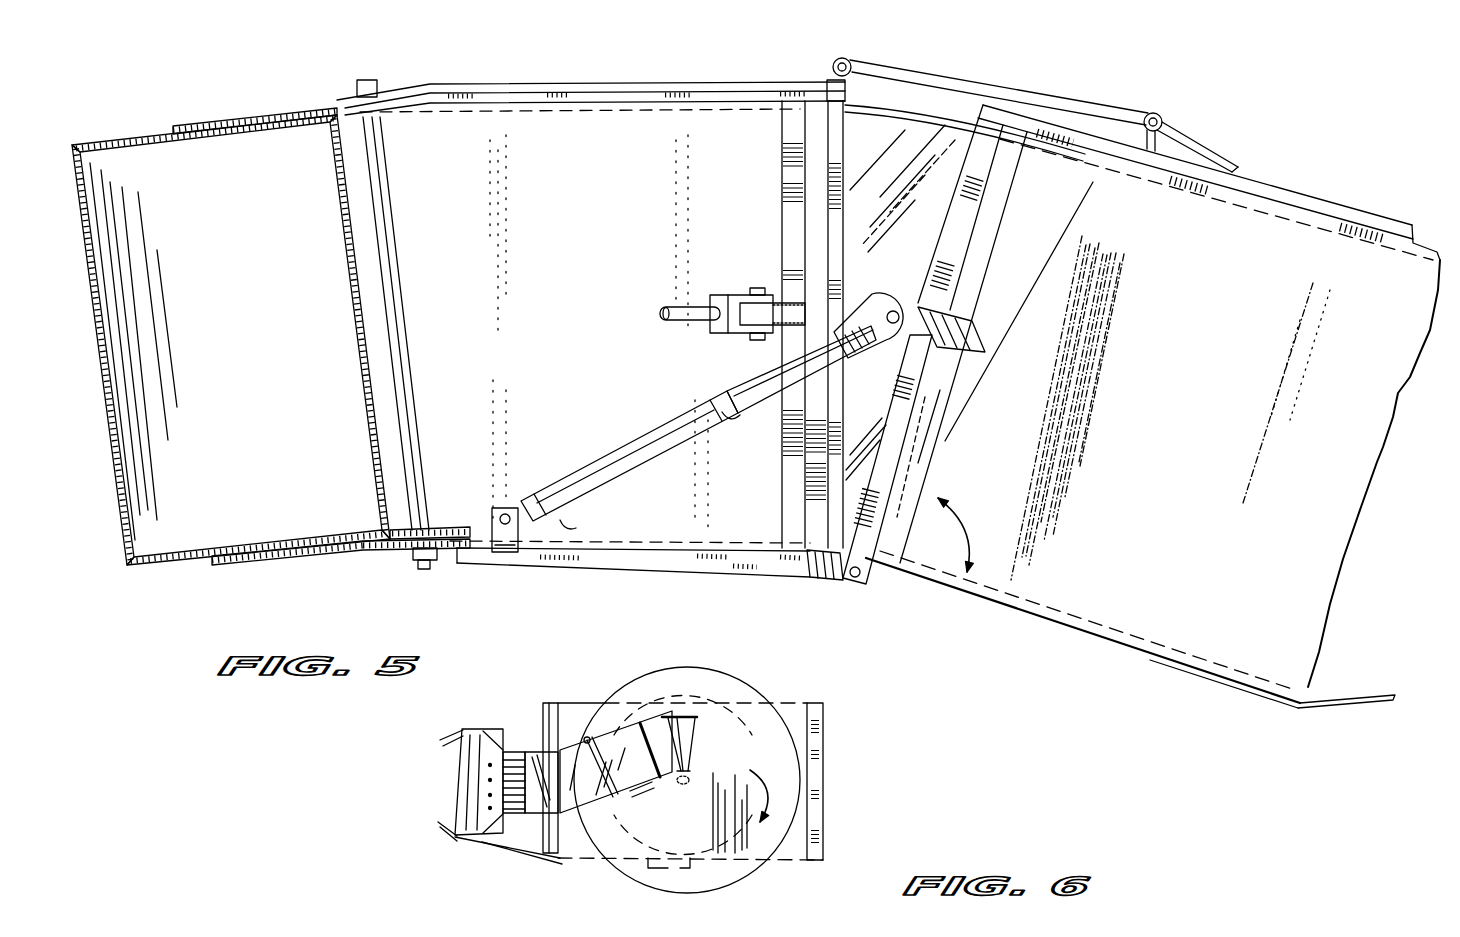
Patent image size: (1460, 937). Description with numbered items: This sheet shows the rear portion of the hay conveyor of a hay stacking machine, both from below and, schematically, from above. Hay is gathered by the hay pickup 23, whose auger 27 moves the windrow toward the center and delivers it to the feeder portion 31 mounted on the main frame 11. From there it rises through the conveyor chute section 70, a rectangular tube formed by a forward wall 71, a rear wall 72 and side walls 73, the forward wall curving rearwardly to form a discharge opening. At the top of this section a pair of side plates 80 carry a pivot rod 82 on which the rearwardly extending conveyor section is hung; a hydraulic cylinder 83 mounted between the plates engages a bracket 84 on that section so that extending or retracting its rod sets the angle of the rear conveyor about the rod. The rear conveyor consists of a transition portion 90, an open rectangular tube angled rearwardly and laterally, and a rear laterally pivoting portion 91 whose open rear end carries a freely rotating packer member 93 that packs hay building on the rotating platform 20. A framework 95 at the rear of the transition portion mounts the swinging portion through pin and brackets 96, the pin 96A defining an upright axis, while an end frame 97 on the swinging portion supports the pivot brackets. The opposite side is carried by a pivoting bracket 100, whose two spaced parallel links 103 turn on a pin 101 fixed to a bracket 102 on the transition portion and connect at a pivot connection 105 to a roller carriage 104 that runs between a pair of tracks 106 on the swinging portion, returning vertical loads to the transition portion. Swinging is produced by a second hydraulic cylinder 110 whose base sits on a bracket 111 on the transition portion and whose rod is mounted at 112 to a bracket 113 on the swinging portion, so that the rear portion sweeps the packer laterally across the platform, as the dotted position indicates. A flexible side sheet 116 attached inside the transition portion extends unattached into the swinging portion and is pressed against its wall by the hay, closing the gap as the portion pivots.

In FIG. 6, the main frame 11 is at (572, 858).
In FIG. 6, the rotating platform 20 is at (760, 712).
In FIG. 6, the hay pickup 23 is at (478, 808).
In FIG. 6, the auger 27 is at (488, 753).
In FIG. 6, the feeder portion 31 is at (516, 806).
In FIG. 5, the conveyor chute section 70 is at (271, 325).
In FIG. 6, the conveyor chute section 70 is at (533, 752).
In FIG. 5, the forward wall 71 is at (112, 433).
In FIG. 5, the rear wall 72 is at (358, 340).
In FIG. 5, the side walls 73 is at (198, 137).
In FIG. 5, the side plates 80 is at (263, 113).
In FIG. 5, the pivot rod 82 is at (408, 390).
In FIG. 5, the hydraulic cylinder 83 is at (683, 310).
In FIG. 5, the bracket 84 is at (741, 293).
In FIG. 5, the transition portion 90 is at (591, 322).
In FIG. 6, the transition portion 90 is at (545, 752).
In FIG. 5, the rear laterally pivoting portion 91 is at (1145, 412).
In FIG. 6, the rear laterally pivoting portion 91 is at (613, 747).
In FIG. 6, the packer member 93 is at (690, 750).
In FIG. 5, the framework 95 is at (783, 148).
In FIG. 5, the pin and brackets 96 is at (826, 580).
In FIG. 6, the pin and brackets 96 is at (587, 743).
In FIG. 5, the pin 96A is at (853, 582).
In FIG. 5, the end frame 97 is at (953, 250).
In FIG. 5, the pivoting bracket 100 is at (1056, 88).
In FIG. 6, the pivoting bracket 100 is at (642, 797).
In FIG. 5, the pin 101 is at (850, 62).
In FIG. 5, the bracket 102 is at (813, 77).
In FIG. 5, the links 103 is at (1100, 107).
In FIG. 5, the roller carriage 104 is at (1197, 143).
In FIG. 5, the pivot pin 105 is at (1162, 116).
In FIG. 5, the tracks 106 is at (1342, 208).
In FIG. 5, the second hydraulic cylinder 110 is at (617, 453).
In FIG. 5, the bracket 111 is at (490, 522).
In FIG. 5, the rod mounting 112 is at (885, 306).
In FIG. 5, the bracket 113 is at (955, 340).
In FIG. 5, the side sheet 116 is at (932, 115).